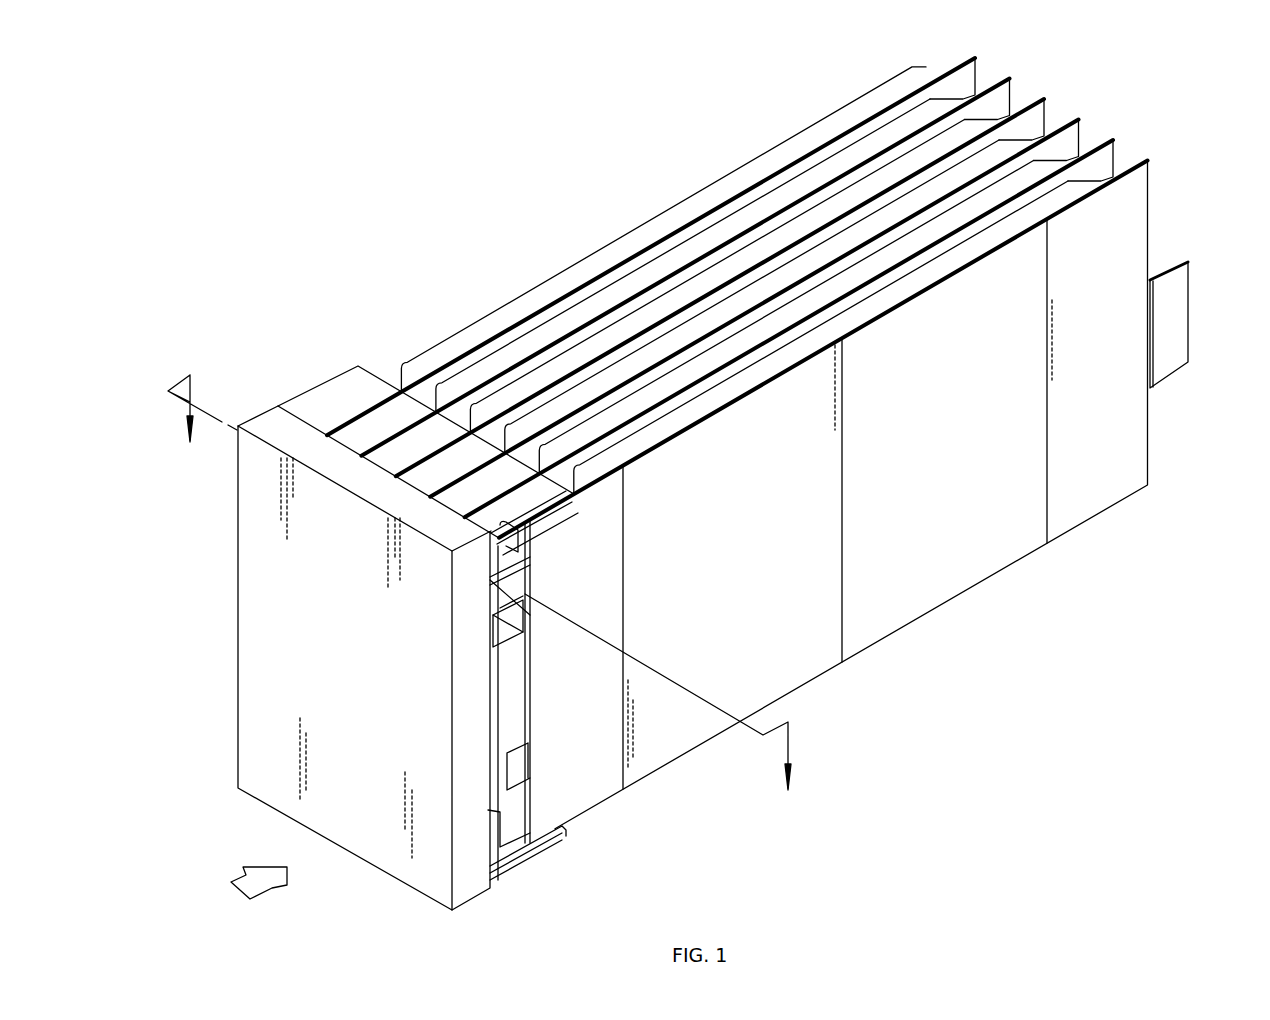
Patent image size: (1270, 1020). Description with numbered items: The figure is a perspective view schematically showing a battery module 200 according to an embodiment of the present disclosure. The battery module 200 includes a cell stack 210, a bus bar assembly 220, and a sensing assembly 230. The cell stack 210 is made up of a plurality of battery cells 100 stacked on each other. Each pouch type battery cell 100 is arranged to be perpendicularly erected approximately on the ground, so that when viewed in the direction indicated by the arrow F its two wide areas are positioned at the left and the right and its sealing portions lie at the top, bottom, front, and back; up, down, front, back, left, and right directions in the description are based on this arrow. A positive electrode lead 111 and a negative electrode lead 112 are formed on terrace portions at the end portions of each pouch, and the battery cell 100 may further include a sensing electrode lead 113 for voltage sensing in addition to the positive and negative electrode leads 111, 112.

The battery cell 100 is at (832, 128).
The positive electrode lead 111 is at (1172, 318).
The negative electrode lead 112 is at (508, 723).
The sensing electrode lead 113 is at (523, 597).
The battery module 200 is at (331, 116).
The cell stack 210 is at (963, 50).
The bus bar assembly 220 is at (334, 368).
The sensing assembly 230 is at (233, 557).